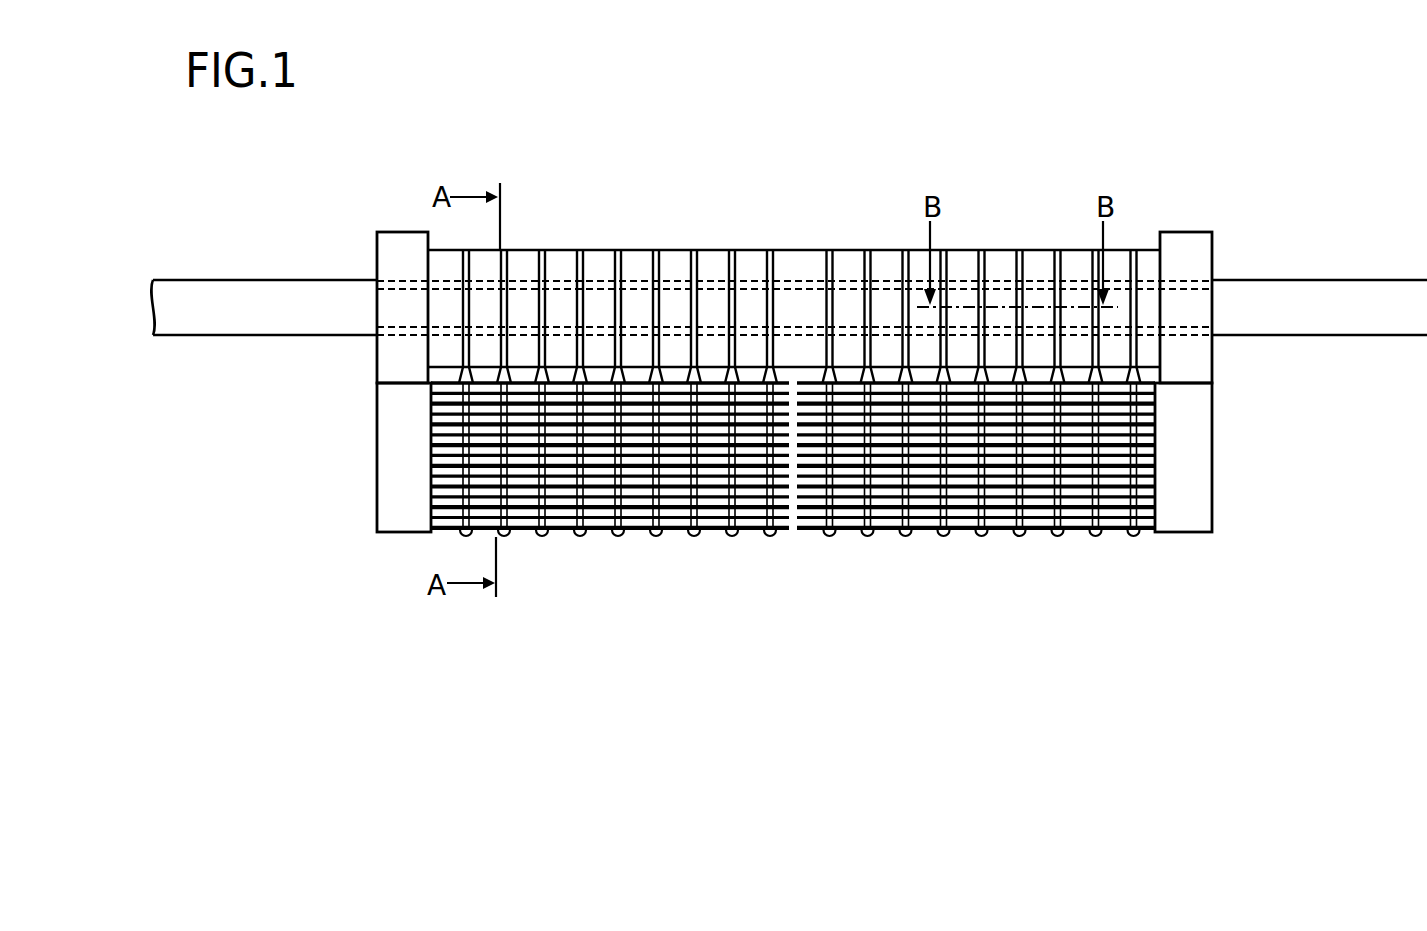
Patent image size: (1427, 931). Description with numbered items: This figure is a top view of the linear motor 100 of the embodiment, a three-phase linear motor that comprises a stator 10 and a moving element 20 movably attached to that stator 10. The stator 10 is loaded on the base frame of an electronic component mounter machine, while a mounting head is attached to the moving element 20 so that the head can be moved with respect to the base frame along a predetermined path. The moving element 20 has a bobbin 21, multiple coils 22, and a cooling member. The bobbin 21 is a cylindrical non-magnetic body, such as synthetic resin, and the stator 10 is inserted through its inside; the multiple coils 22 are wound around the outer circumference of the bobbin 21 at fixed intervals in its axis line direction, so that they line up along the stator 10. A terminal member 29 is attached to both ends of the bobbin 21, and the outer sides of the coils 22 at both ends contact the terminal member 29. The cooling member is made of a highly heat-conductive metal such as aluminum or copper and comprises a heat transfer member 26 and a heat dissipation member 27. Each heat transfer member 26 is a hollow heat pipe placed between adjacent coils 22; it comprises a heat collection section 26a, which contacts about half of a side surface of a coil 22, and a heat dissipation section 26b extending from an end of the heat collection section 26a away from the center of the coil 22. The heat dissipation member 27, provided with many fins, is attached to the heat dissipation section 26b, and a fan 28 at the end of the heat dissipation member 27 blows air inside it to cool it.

The linear motor 100 is at (783, 122).
The stator 10 is at (240, 257).
The moving element 20 is at (338, 449).
The bobbin 21 is at (846, 283).
The coils 22 is at (782, 268).
The heat transfer member 26 is at (688, 194).
The heat collection section 26a is at (618, 250).
The heat dissipation section 26b is at (638, 430).
The heat dissipation member 27 is at (630, 507).
The fan 28 is at (389, 487).
The terminal member 29 is at (400, 248).